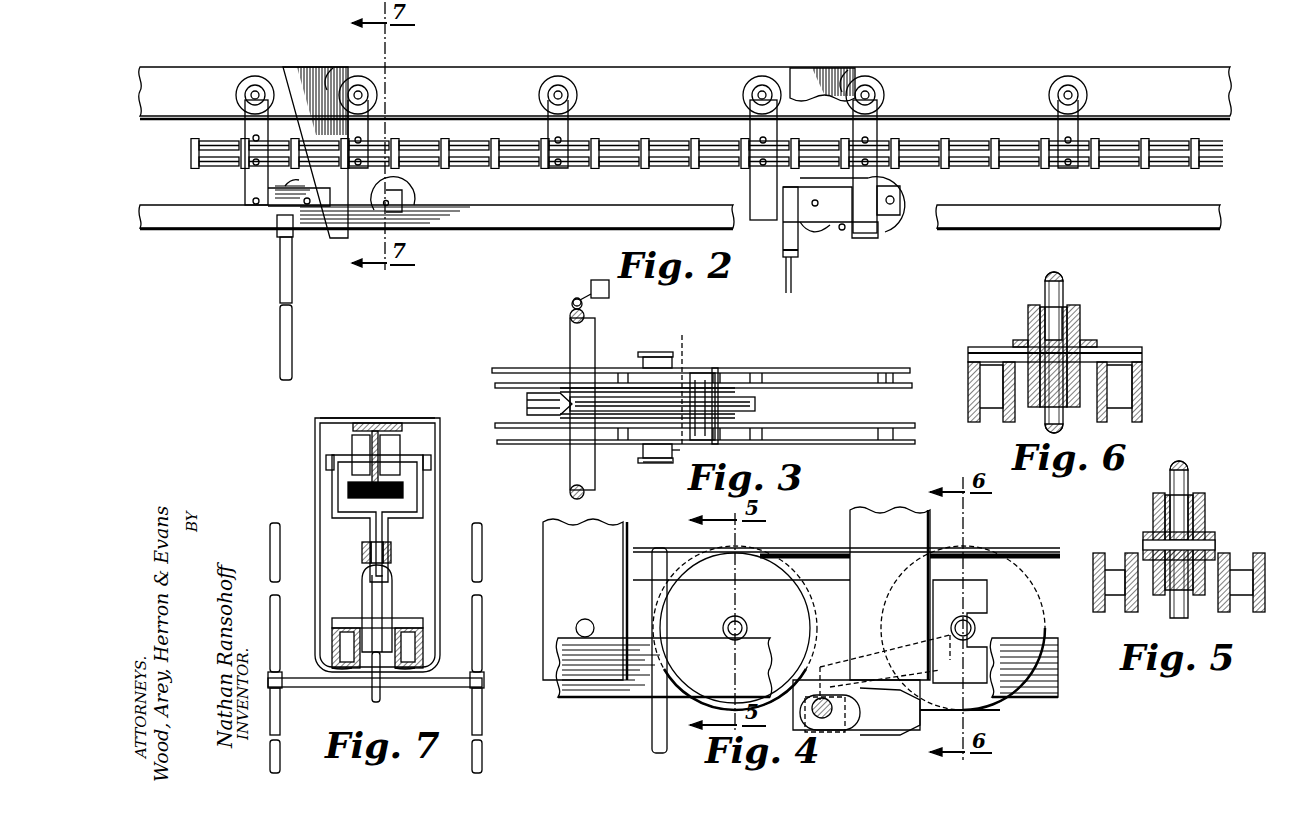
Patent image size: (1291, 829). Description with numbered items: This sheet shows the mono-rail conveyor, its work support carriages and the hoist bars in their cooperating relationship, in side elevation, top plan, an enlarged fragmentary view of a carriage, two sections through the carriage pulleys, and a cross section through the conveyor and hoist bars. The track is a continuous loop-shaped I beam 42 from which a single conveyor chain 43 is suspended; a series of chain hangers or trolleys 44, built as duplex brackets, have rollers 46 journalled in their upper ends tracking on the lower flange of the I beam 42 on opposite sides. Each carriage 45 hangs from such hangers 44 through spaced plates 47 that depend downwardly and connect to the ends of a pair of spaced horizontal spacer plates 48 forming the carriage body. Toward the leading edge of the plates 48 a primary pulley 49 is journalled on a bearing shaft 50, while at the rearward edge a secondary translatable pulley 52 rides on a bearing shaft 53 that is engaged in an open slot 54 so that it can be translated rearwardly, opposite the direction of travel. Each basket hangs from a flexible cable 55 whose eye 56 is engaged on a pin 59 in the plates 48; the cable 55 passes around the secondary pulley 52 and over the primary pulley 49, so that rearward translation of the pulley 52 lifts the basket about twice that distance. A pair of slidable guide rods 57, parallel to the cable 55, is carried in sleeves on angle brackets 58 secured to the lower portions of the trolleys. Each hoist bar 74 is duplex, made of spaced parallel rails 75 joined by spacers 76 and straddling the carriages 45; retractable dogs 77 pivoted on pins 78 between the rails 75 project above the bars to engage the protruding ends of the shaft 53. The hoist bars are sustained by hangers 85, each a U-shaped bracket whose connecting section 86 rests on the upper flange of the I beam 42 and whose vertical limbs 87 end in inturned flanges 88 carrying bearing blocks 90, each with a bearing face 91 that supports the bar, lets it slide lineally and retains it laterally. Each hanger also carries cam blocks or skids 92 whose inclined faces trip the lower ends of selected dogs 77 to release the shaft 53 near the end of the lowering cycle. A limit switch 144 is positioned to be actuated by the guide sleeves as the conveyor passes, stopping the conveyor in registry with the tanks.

In FIG. 2, the I beam 42 is at (485, 67).
In FIG. 7, the I beam 42 is at (376, 421).
In FIG. 2, the conveyor chain 43 is at (633, 168).
In FIG. 7, the conveyor chain 43 is at (390, 557).
In FIG. 2, the chain hangers or trolleys 44 is at (238, 108).
In FIG. 7, the chain hangers or trolleys 44 is at (415, 482).
In FIG. 2, the work support carriages 45 is at (240, 187).
In FIG. 2, the rollers 46 is at (262, 66).
In FIG. 7, the rollers 46 is at (396, 432).
In FIG. 2, the spaced plates 47 is at (232, 174).
In FIG. 3, the spaced plates 47 is at (526, 400).
In FIG. 4, the spaced plates 47 is at (610, 521).
In FIG. 7, the spaced plates 47 is at (364, 547).
In FIG. 2, the spacer plates 48 is at (800, 244).
In FIG. 3, the spacer plates 48 is at (618, 420).
In FIG. 4, the spacer plates 48 is at (652, 580).
In FIG. 6, the spacer plates 48 is at (1034, 304).
In FIG. 5, the spacer plates 48 is at (1158, 496).
In FIG. 2, the primary pulley 49 is at (296, 184).
In FIG. 3, the primary pulley 49 is at (580, 418).
In FIG. 4, the primary pulley 49 is at (712, 558).
In FIG. 5, the primary pulley 49 is at (1192, 480).
In FIG. 4, the bearing shaft 50 is at (724, 628).
In FIG. 5, the bearing shaft 50 is at (1144, 540).
In FIG. 2, the secondary translatable pulley 52 is at (403, 188).
In FIG. 3, the secondary translatable pulley 52 is at (750, 402).
In FIG. 4, the secondary translatable pulley 52 is at (990, 710).
In FIG. 6, the secondary translatable pulley 52 is at (1066, 299).
In FIG. 7, the secondary translatable pulley 52 is at (384, 591).
In FIG. 2, the bearing shaft 53 is at (403, 202).
In FIG. 3, the bearing shaft 53 is at (718, 370).
In FIG. 4, the bearing shaft 53 is at (979, 635).
In FIG. 6, the bearing shaft 53 is at (1138, 350).
In FIG. 7, the bearing shaft 53 is at (354, 619).
In FIG. 4, the open slot 54 is at (980, 612).
In FIG. 2, the flexible cable 55 is at (786, 282).
In FIG. 4, the flexible cable 55 is at (826, 548).
In FIG. 6, the flexible cable 55 is at (1058, 276).
In FIG. 5, the flexible cable 55 is at (1182, 467).
In FIG. 7, the flexible cable 55 is at (376, 702).
In FIG. 2, the eye 56 is at (352, 238).
In FIG. 4, the eye 56 is at (885, 720).
In FIG. 2, the guide rods 57 is at (278, 318).
In FIG. 7, the guide rods 57 is at (280, 763).
In FIG. 3, the angle brackets 58 is at (576, 345).
In FIG. 7, the angle brackets 58 is at (462, 688).
In FIG. 2, the pin 59 is at (816, 228).
In FIG. 4, the pin 59 is at (814, 708).
In FIG. 2, the hoist bar 74 is at (190, 224).
In FIG. 3, the hoist bar 74 is at (844, 367).
In FIG. 4, the hoist bar 74 is at (807, 658).
In FIG. 6, the hoist bar 74 is at (968, 406).
In FIG. 5, the hoist bar 74 is at (1270, 540).
In FIG. 2, the rails 75 is at (238, 224).
In FIG. 3, the rails 75 is at (874, 367).
In FIG. 6, the rails 75 is at (1141, 378).
In FIG. 5, the rails 75 is at (1094, 555).
In FIG. 3, the spacers 76 is at (895, 381).
In FIG. 6, the spacers 76 is at (1148, 399).
In FIG. 5, the spacers 76 is at (1116, 594).
In FIG. 3, the retractable latches or dogs 77 is at (700, 370).
In FIG. 4, the retractable latches or dogs 77 is at (844, 664).
In FIG. 7, the retractable latches or dogs 77 is at (396, 668).
In FIG. 3, the pins 78 is at (682, 352).
In FIG. 2, the hangers 85 is at (283, 66).
In FIG. 3, the hangers 85 is at (650, 464).
In FIG. 7, the hangers 85 is at (316, 500).
In FIG. 2, the connecting section 86 is at (318, 67).
In FIG. 7, the connecting section 86 is at (342, 416).
In FIG. 2, the vertical limbs 87 is at (333, 68).
In FIG. 3, the vertical limbs 87 is at (664, 352).
In FIG. 7, the vertical limbs 87 is at (314, 450).
In FIG. 3, the inturned flanges 88 is at (676, 452).
In FIG. 7, the inturned flanges 88 is at (342, 670).
In FIG. 7, the bearing blocks 90 is at (331, 644).
In FIG. 7, the bearing face 91 is at (329, 661).
In FIG. 4, the cam blocks or skids 92 is at (838, 732).
In FIG. 2, the limit switch 144 is at (590, 286).